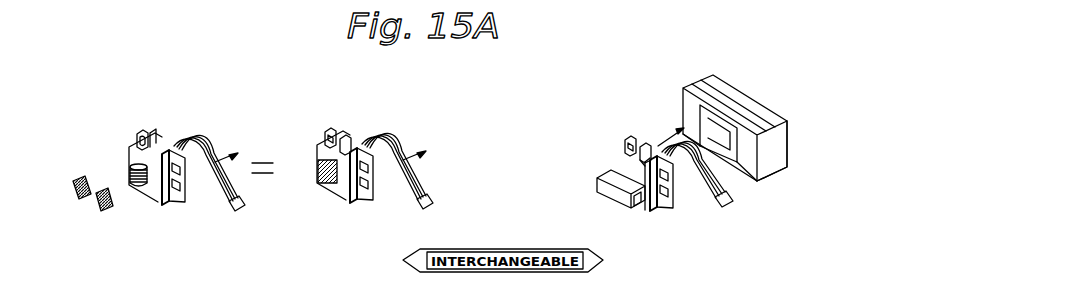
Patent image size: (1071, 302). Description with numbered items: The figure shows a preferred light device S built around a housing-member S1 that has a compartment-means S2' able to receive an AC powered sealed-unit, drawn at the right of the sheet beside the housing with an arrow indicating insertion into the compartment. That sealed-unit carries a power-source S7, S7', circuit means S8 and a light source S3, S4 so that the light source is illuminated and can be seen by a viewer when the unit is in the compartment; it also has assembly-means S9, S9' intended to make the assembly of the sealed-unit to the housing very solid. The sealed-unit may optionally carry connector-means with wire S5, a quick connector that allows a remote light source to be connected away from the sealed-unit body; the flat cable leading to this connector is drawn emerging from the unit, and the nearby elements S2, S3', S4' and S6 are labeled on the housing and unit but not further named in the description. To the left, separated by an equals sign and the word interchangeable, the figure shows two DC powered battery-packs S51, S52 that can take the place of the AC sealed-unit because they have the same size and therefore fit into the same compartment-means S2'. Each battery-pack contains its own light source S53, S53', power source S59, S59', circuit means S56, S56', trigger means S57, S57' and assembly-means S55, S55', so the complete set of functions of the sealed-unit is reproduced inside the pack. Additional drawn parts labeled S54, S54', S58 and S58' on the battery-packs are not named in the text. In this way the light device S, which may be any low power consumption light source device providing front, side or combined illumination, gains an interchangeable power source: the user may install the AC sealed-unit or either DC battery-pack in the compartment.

The first light device S is at (786, 126).
The housing-member S1 is at (762, 108).
The plate S2 is at (626, 201).
The compartment-means S2' is at (737, 164).
The light source S3 is at (618, 120).
The first rail S3' is at (723, 89).
The light source S4 is at (646, 130).
The second rail S4' is at (738, 87).
The connector-means with wire S5 is at (727, 201).
The flat cable S6 is at (694, 200).
The power-source S7 is at (602, 195).
The power-source S7' is at (594, 187).
The circuit means S8 is at (658, 212).
The assembly-means S9 is at (676, 202).
The assembly-means S9' is at (601, 148).
The DC powered battery-pack S51 is at (357, 144).
The DC powered battery-pack S52 is at (168, 152).
The light source S53 is at (343, 124).
The light source S53' is at (160, 124).
The cable connector S54 is at (410, 220).
The cable connector S54' is at (222, 224).
The assembly-means S55 is at (375, 196).
The assembly-means S55' is at (187, 200).
The circuit means S56 is at (352, 199).
The circuit means S56' is at (166, 202).
The trigger means S57 is at (321, 184).
The trigger means S57' is at (134, 187).
The hatched face S58 is at (301, 185).
The hatched block S58' is at (71, 207).
The power source S59 is at (309, 127).
The power source S59' is at (122, 132).